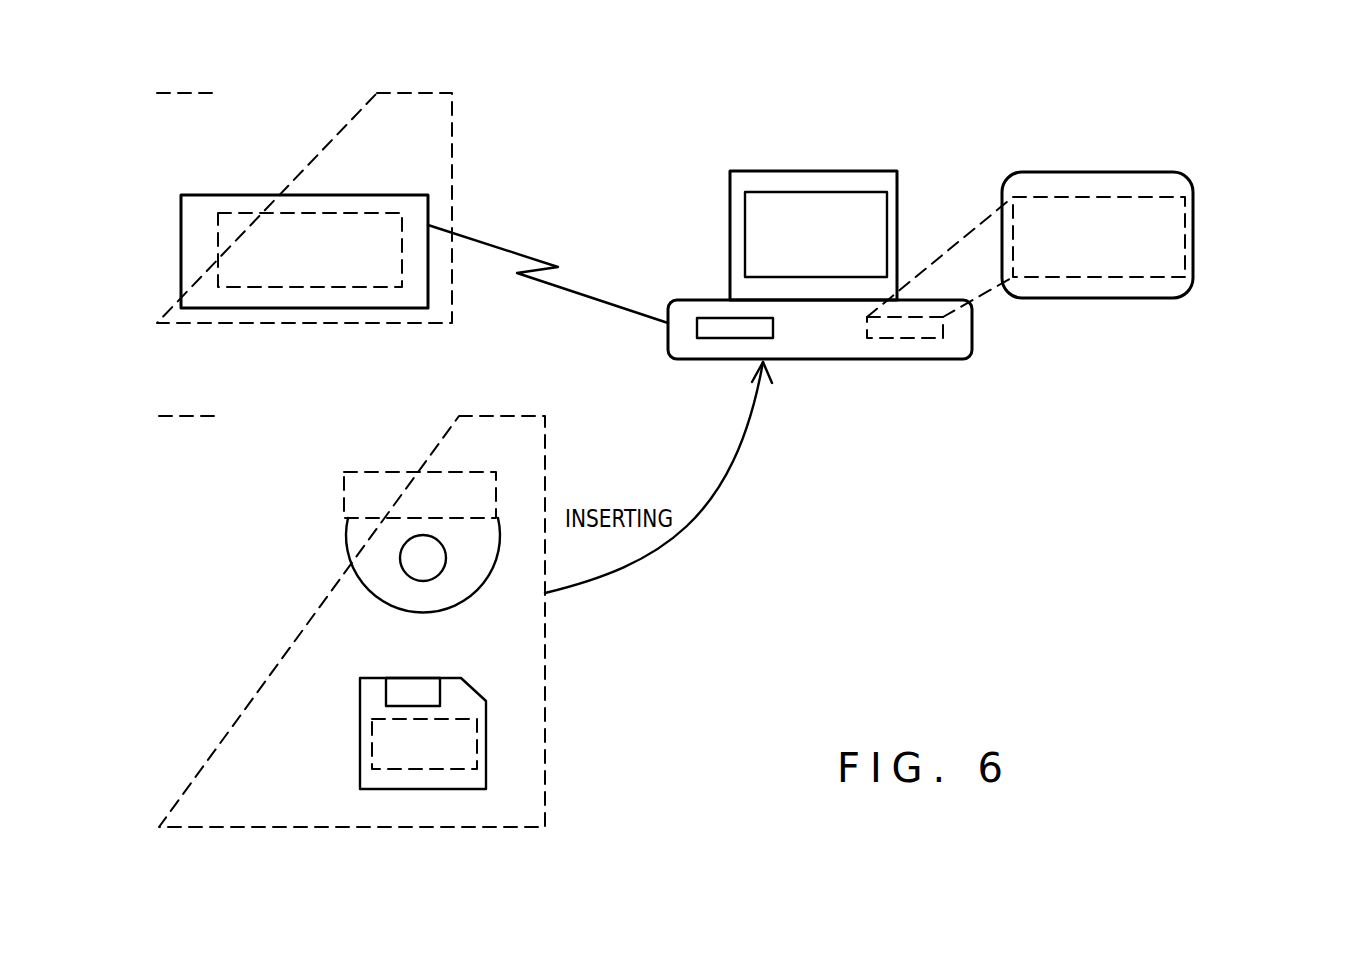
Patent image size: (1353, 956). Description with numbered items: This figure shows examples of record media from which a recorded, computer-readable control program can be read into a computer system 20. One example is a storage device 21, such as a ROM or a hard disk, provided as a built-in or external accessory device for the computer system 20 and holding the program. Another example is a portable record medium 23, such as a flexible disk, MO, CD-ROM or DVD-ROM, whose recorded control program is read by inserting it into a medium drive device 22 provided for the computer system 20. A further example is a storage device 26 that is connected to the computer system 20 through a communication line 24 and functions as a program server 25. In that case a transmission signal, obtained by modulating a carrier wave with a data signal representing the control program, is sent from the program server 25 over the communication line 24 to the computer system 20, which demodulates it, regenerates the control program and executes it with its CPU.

The computer system 20 is at (750, 171).
The storage device 21 is at (1030, 172).
The medium drive device 22 is at (858, 359).
The portable record medium 23 is at (352, 610).
The communication line 24 is at (553, 244).
The program server 25 is at (304, 187).
The storage device 26 is at (360, 195).